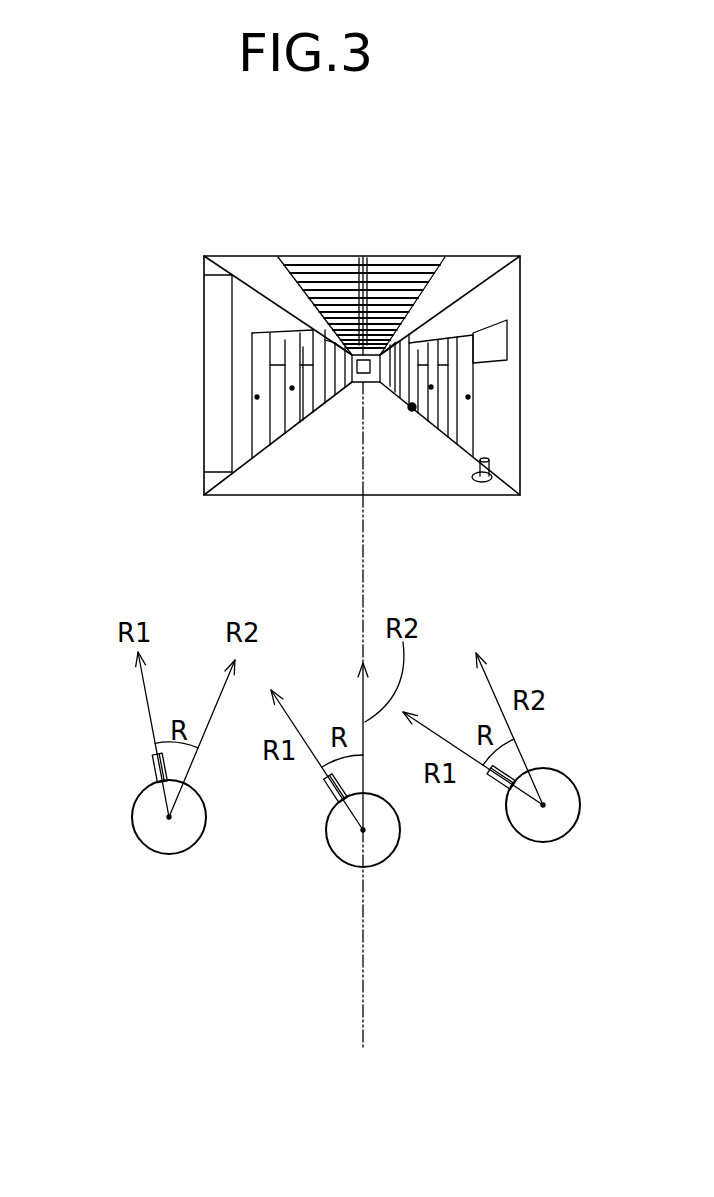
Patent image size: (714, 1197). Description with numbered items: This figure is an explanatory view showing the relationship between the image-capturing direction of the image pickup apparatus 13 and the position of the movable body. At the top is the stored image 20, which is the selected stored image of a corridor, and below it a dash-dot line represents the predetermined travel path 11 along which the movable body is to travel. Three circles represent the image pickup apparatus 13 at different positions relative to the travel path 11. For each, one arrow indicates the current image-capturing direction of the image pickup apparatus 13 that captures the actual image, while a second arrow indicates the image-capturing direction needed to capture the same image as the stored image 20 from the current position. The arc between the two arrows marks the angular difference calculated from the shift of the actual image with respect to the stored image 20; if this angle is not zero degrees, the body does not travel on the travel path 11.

The stored image 20 is at (204, 365).
The image pickup apparatus 13 is at (155, 835).
The travel path 11 is at (364, 998).